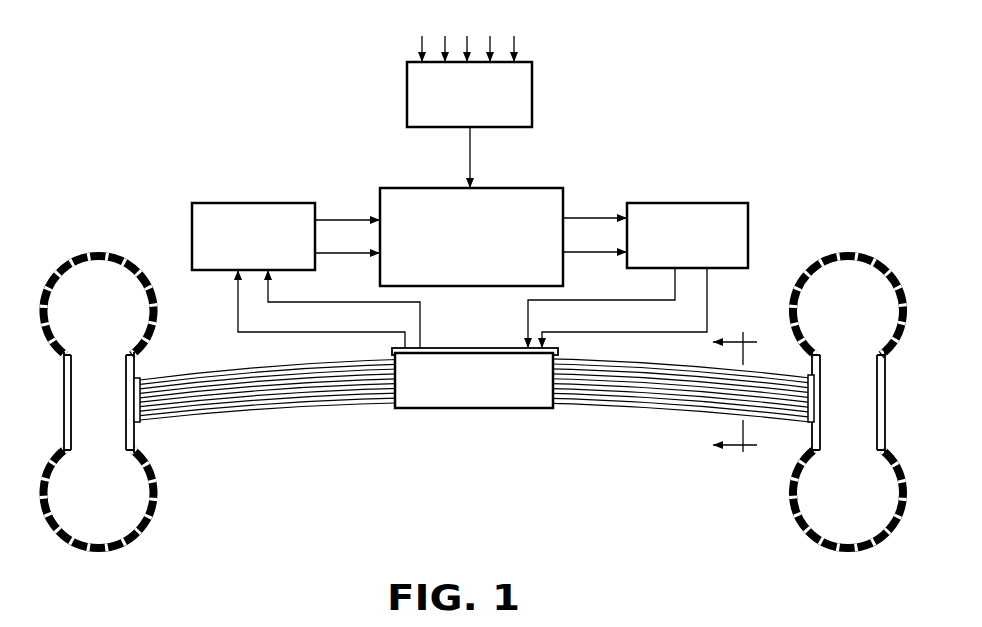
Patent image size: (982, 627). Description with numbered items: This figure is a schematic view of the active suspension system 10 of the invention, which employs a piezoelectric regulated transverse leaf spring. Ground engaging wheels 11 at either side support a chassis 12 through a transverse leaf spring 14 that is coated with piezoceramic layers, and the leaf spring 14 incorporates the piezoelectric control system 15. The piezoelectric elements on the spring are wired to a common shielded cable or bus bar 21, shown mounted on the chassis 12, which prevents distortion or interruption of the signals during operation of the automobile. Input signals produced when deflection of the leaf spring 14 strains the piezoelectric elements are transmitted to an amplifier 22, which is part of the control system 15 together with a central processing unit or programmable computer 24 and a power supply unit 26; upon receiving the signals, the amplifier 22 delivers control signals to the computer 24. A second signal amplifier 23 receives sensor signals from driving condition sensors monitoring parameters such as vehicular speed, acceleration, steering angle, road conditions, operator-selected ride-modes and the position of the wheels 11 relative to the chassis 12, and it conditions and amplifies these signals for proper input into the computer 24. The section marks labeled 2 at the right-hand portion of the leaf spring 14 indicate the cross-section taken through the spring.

The active suspension system 10 is at (790, 110).
The ground engaging wheels 11 is at (92, 253).
The chassis 12 is at (452, 402).
The transverse leaf spring 14 is at (303, 402).
The piezoelectric control system 15 is at (540, 168).
The bus bar 21 is at (457, 348).
The amplifier 22 is at (250, 203).
The second signal amplifier 23 is at (532, 90).
The central processing unit or programmable computer 24 is at (392, 200).
The power supply unit 26 is at (738, 215).
The section line 2- 2 is at (737, 395).